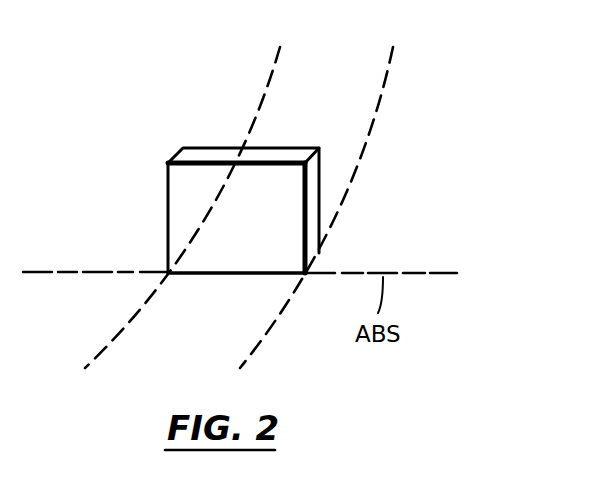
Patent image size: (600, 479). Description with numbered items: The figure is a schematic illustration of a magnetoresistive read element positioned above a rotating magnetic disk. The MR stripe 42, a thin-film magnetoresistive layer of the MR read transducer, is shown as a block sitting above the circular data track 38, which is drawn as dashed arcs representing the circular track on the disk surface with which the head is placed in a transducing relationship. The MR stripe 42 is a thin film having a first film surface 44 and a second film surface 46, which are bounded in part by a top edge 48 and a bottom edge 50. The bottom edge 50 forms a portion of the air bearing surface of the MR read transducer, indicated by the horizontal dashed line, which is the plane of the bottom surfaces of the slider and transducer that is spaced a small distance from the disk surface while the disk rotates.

The circular data track 38 is at (337, 92).
The MR stripe 42 is at (214, 103).
The first film surface 44 is at (187, 192).
The second film surface 46 is at (274, 149).
The top edge 48 is at (195, 157).
The bottom edge 50 is at (230, 275).